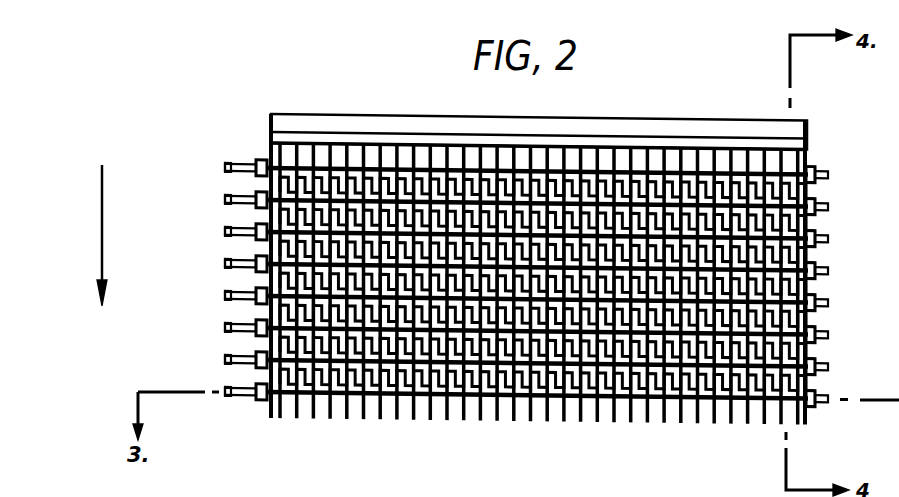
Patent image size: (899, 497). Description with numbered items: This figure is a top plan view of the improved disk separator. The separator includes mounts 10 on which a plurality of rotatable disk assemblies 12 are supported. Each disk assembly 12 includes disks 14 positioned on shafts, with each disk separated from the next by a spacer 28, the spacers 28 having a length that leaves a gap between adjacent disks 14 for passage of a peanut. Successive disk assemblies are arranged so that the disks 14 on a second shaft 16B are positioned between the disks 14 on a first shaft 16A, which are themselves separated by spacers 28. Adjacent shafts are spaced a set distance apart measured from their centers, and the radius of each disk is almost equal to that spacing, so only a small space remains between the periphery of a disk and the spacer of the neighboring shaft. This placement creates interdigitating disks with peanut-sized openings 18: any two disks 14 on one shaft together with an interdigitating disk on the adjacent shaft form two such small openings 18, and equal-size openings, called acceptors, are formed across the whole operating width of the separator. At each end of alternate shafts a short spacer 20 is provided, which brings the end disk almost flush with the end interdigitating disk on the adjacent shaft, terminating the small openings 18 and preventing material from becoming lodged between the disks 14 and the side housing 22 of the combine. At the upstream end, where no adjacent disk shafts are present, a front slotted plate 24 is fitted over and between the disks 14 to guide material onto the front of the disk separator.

The mounts 10 is at (271, 405).
The disk assembly 12 is at (414, 425).
The disks 14 is at (344, 414).
The first shaft 16A is at (225, 168).
The second shaft 16B is at (225, 200).
The openings 18 is at (794, 218).
The short spacer 20 is at (293, 400).
The side housing 22 is at (796, 409).
The front slotted plate 24 is at (728, 140).
The spacer 28 is at (621, 409).